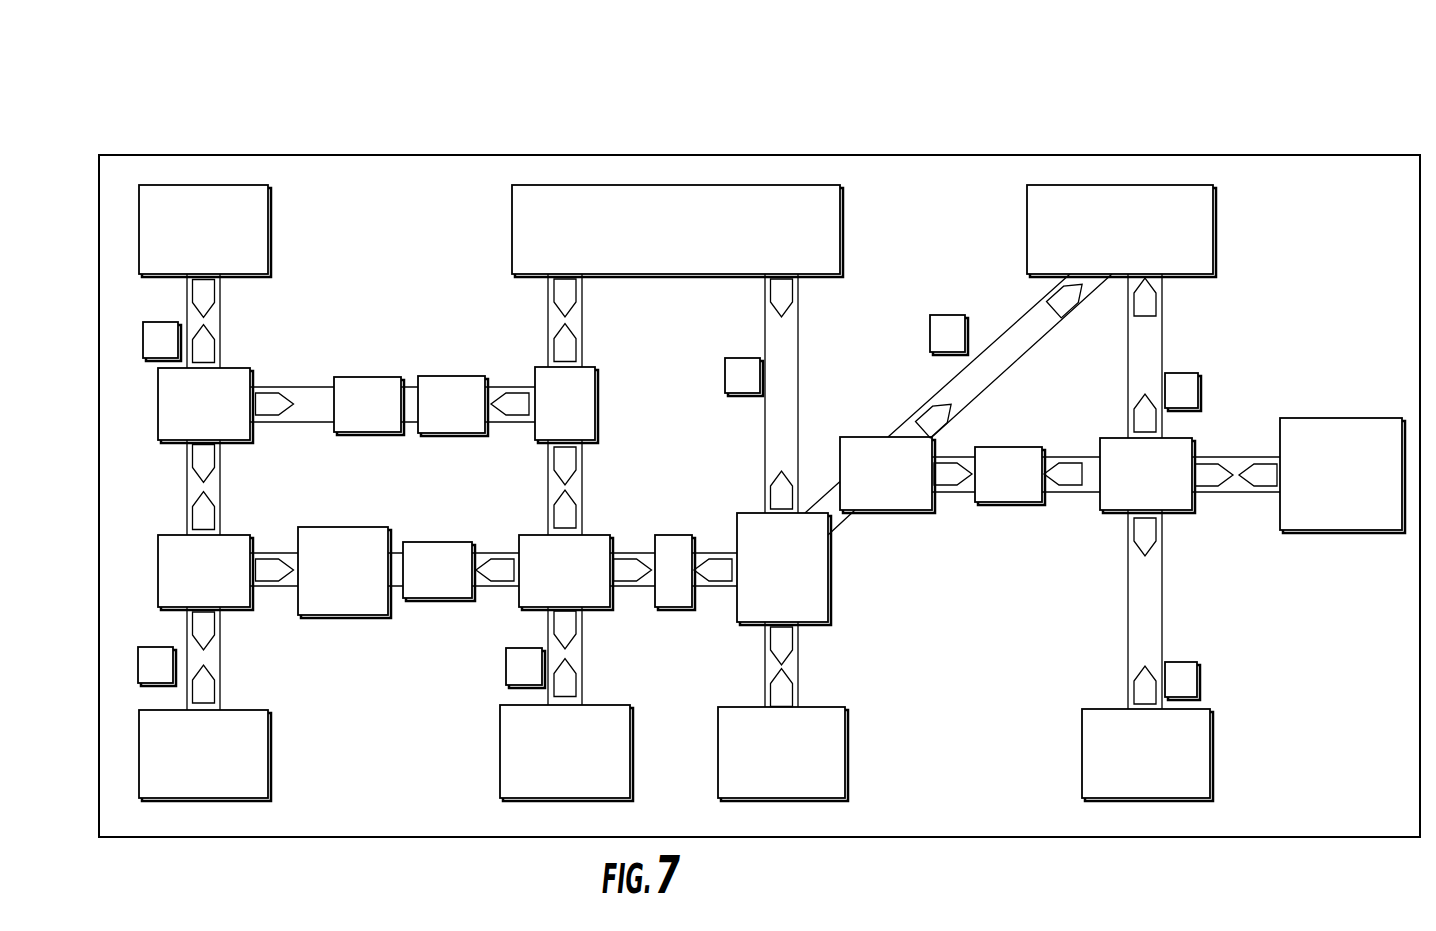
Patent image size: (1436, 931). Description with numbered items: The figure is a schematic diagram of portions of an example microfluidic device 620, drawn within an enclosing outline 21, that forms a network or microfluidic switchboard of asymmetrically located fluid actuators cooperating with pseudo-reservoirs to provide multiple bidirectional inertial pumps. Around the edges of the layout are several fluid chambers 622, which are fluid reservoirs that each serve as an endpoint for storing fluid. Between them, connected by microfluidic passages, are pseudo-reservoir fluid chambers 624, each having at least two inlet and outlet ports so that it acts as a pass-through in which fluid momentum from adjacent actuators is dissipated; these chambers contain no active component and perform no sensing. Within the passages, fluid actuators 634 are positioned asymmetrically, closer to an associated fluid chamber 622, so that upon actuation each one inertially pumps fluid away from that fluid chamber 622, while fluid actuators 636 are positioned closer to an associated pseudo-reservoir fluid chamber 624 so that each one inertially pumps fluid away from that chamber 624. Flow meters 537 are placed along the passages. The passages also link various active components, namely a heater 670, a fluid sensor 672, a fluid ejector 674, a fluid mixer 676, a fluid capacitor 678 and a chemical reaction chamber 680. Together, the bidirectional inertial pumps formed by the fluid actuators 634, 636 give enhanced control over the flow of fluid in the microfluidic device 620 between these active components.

The aircraft 21 is at (1290, 155).
The microfluidic device 620 is at (285, 85).
The fluid chambers 622 is at (220, 244).
The pseudo-reservoir fluid chambers 624 is at (220, 418).
The fluid actuators 634 is at (215, 295).
The fluid actuators 636 is at (215, 343).
The flow meters 537 is at (143, 345).
The heater 670 is at (369, 377).
The fluid sensor 672 is at (456, 376).
The fluid ejector 674 is at (441, 542).
The fluid mixer 676 is at (668, 607).
The fluid capacitor 678 is at (998, 502).
The chemical reaction chamber 680 is at (322, 615).